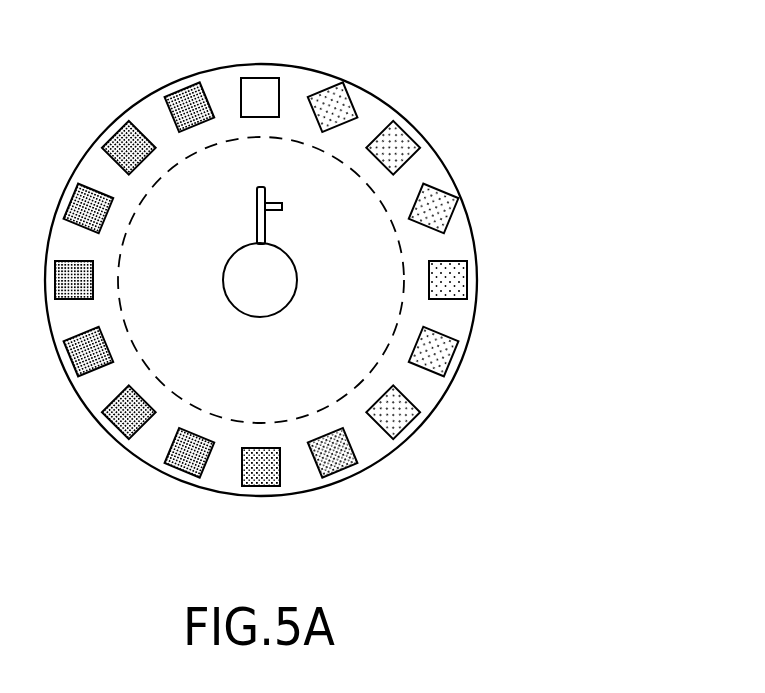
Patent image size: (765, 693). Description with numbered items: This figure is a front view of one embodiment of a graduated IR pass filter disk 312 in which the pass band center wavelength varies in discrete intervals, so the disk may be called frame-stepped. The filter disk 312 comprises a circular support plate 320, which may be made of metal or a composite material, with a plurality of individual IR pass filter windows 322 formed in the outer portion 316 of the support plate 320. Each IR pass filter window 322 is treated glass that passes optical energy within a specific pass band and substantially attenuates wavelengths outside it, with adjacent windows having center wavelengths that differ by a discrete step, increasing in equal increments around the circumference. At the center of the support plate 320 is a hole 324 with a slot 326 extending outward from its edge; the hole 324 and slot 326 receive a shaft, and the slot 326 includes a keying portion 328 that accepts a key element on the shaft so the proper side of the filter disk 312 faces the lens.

The graduated IR pass filter disk 312 is at (538, 276).
The outer portion 316 is at (425, 385).
The circular support plate 320 is at (293, 388).
The IR pass filter window 322 is at (267, 88).
The hole 324 is at (297, 272).
The slot 326 is at (257, 213).
The keying portion 328 is at (277, 204).